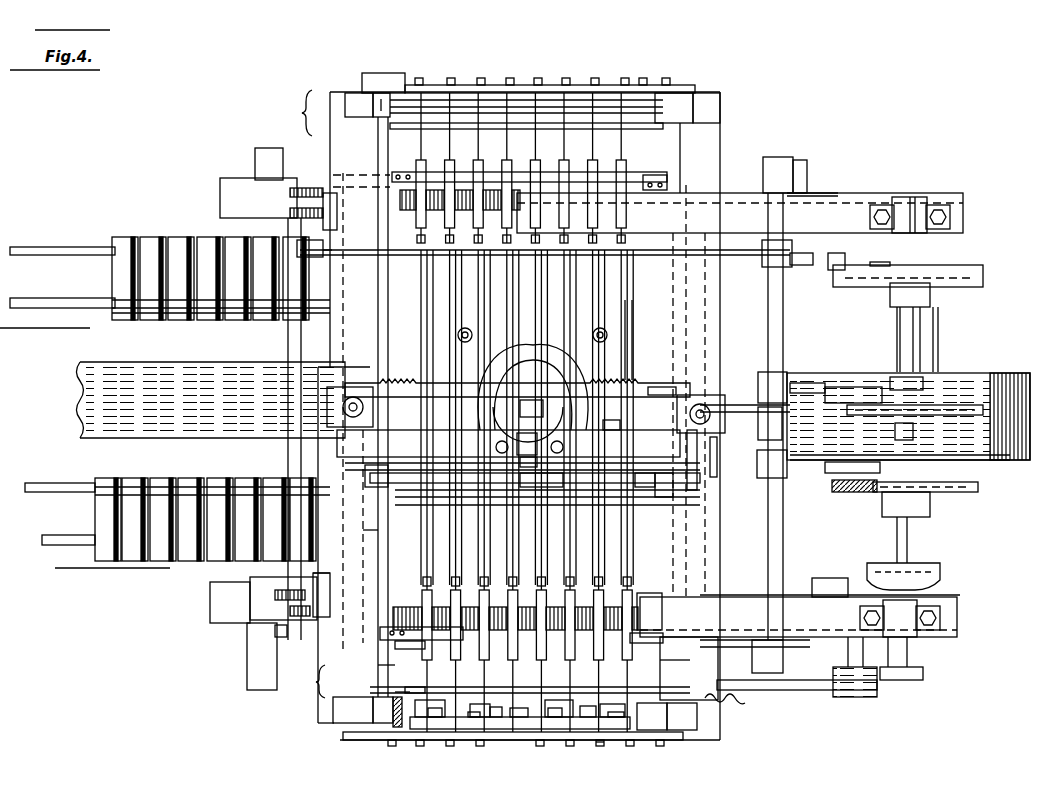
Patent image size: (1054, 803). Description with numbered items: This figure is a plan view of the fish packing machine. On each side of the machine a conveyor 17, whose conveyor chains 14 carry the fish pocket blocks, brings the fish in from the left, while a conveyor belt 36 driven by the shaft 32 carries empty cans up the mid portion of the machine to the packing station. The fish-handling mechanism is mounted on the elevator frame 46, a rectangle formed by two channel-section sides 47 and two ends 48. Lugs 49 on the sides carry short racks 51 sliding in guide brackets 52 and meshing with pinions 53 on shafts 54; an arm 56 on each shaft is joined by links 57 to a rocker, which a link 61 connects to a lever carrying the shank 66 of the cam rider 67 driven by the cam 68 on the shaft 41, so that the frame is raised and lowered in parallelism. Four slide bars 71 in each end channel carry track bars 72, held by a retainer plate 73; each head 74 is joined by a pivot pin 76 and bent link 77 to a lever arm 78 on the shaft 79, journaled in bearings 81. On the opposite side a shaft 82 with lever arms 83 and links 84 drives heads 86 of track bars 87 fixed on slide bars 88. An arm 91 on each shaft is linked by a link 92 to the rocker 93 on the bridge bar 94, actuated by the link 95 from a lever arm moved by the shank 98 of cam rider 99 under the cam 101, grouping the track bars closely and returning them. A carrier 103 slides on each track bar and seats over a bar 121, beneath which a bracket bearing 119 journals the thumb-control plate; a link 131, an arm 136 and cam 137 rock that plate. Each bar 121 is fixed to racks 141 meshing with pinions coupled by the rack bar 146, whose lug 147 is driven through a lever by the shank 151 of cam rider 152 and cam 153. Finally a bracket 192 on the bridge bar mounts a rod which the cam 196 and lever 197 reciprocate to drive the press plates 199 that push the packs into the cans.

The conveyor chains 14 is at (45, 258).
The conveyor 17 is at (105, 262).
The shaft 32 is at (938, 323).
The conveyor belt 36 is at (128, 410).
The shaft 41 is at (897, 323).
The elevator frame 46 is at (294, 113).
The frame sides 47 is at (316, 678).
The frame ends 48 is at (410, 690).
The lugs 49 is at (330, 598).
The rack 51 is at (320, 590).
The guide bracket 52 is at (298, 615).
The pinion 53 is at (275, 594).
The shaft 54 is at (288, 464).
The arm 56 is at (280, 246).
The links 57 is at (372, 252).
The link 61 is at (712, 255).
The shank 66 is at (829, 256).
The cam rider 67 is at (873, 262).
The cam 68 is at (983, 276).
The slide bars 71 is at (588, 725).
The track bar 72 is at (557, 690).
The retainer plate 73 is at (390, 700).
The head 74 is at (615, 736).
The pivot pin 76 is at (600, 742).
The bent link 77 is at (560, 740).
The lever arm 78 is at (387, 76).
The shaft 79 is at (372, 666).
The bearings 81 is at (368, 115).
The shaft 82 is at (665, 663).
The lever arms 83 is at (681, 90).
The links 84 is at (440, 735).
The heads 86 is at (478, 730).
The track bars 87 is at (438, 690).
The slide bars 88 is at (495, 722).
The arm 91 is at (365, 471).
The link 92 is at (584, 475).
The rocker 93 is at (520, 464).
The bridge bar 94 is at (428, 450).
The link 95 is at (687, 445).
The shank 98 is at (830, 472).
The cam rider 99 is at (875, 490).
The cam 101 is at (978, 490).
The carrier 103 is at (424, 614).
The bracket bearing 119 is at (380, 640).
The bar 121 is at (409, 649).
The link 131 is at (710, 472).
The arm 136 is at (848, 580).
The cam 137 is at (940, 570).
The rack 141 is at (363, 531).
The rack bar 146 is at (628, 330).
The lug 147 is at (660, 390).
The shank 151 is at (810, 387).
The cam rider 152 is at (872, 405).
The cam 153 is at (945, 410).
The bracket 192 is at (500, 445).
The cam 196 is at (913, 430).
The lever 197 is at (617, 426).
The press plates 199 is at (502, 416).